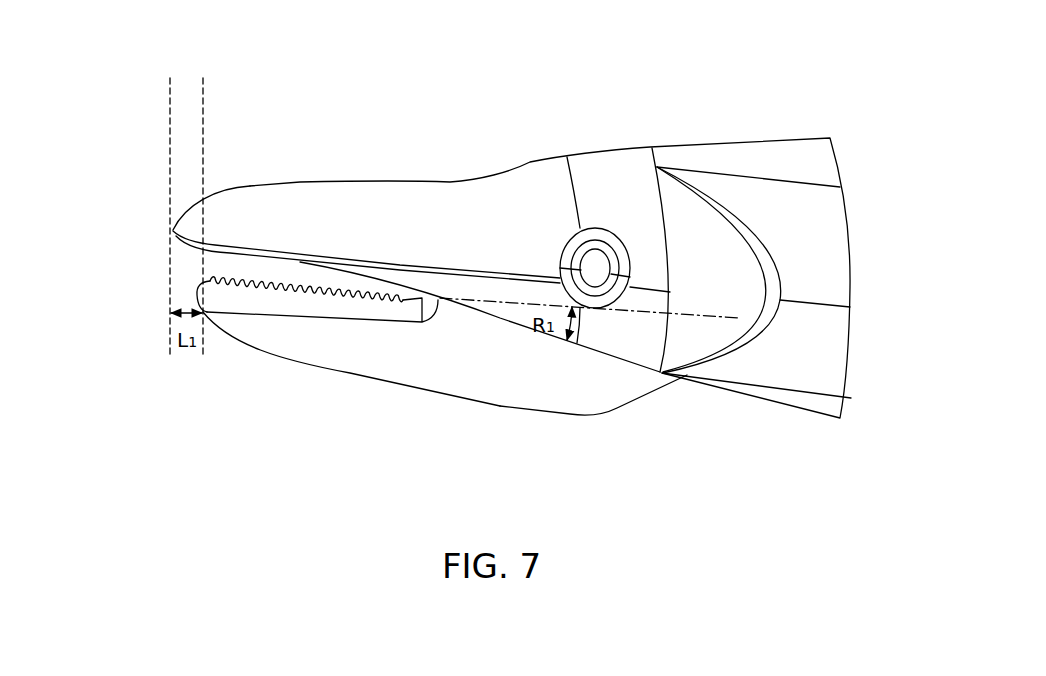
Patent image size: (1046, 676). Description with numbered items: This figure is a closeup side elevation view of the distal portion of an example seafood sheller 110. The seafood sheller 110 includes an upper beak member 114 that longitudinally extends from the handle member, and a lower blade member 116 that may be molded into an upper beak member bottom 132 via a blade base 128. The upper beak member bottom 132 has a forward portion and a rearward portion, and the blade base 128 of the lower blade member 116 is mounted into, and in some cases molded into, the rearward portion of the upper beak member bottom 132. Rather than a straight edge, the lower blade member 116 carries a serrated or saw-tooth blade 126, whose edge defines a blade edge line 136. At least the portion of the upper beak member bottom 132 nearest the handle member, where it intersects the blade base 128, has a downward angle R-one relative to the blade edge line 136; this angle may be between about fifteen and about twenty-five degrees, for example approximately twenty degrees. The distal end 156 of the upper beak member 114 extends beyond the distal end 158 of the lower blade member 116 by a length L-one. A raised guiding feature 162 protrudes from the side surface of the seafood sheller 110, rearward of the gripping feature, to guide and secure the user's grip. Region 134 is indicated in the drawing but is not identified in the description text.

The seafood sheller 110 is at (782, 88).
The upper beak member 114 is at (533, 187).
The lower blade member 116 is at (418, 358).
The serrated or saw-tooth blade 126 is at (298, 303).
The blade base 128 is at (560, 373).
The upper beak member bottom 132 is at (358, 297).
The inner surface of upper jaw 134 is at (205, 263).
The blade edge line 136 is at (685, 318).
The distal end of the upper beak member 156 is at (176, 223).
The distal end of the lower blade member 158 is at (203, 295).
The raised guiding feature 162 is at (690, 240).